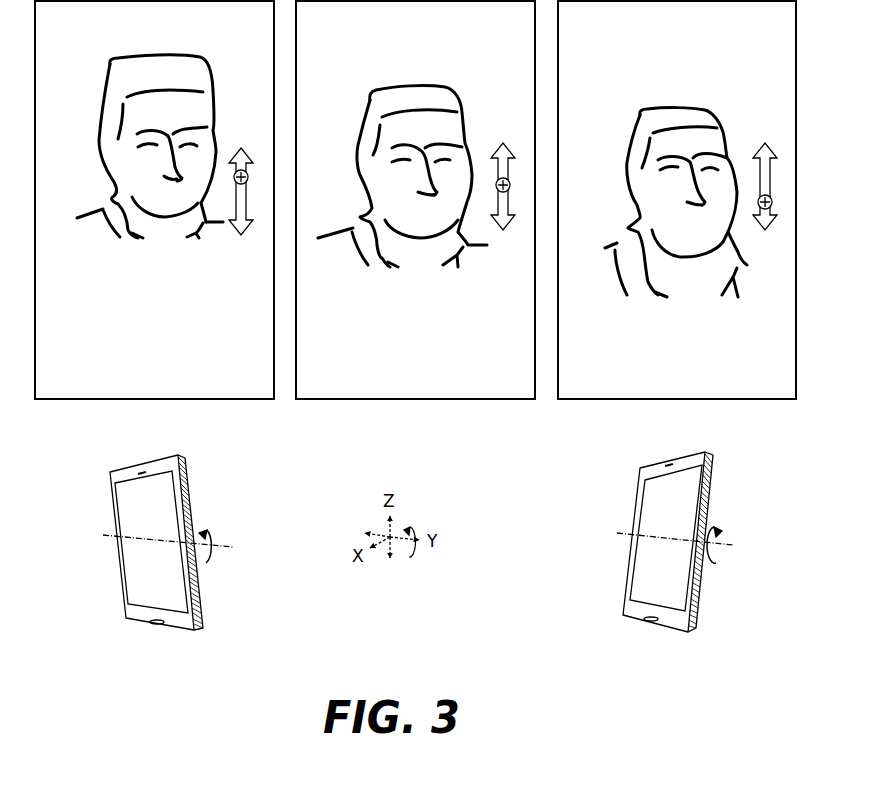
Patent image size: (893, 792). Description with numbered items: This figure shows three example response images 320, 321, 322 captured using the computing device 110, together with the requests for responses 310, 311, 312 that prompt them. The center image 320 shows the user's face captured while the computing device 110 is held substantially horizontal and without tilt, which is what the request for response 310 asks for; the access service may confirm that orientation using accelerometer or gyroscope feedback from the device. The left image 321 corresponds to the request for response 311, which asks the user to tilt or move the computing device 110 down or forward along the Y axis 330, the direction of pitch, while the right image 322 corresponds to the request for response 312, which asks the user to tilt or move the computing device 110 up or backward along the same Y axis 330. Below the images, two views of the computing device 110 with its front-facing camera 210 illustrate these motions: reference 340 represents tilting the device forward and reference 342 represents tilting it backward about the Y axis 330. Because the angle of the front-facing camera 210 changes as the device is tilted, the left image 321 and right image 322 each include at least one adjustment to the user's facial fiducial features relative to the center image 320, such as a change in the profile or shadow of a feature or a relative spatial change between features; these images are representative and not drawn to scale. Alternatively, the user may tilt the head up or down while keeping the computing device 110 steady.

The computing device 110 is at (182, 463).
The front-facing camera 210 is at (117, 481).
The request for response 310 is at (503, 142).
The request for response 311 is at (241, 147).
The request for response 312 is at (765, 142).
The center image 320 is at (479, 58).
The left image 321 is at (216, 57).
The right image 322 is at (748, 58).
The Y axis 330 is at (110, 537).
The reference 340 is at (210, 519).
The reference 342 is at (719, 520).